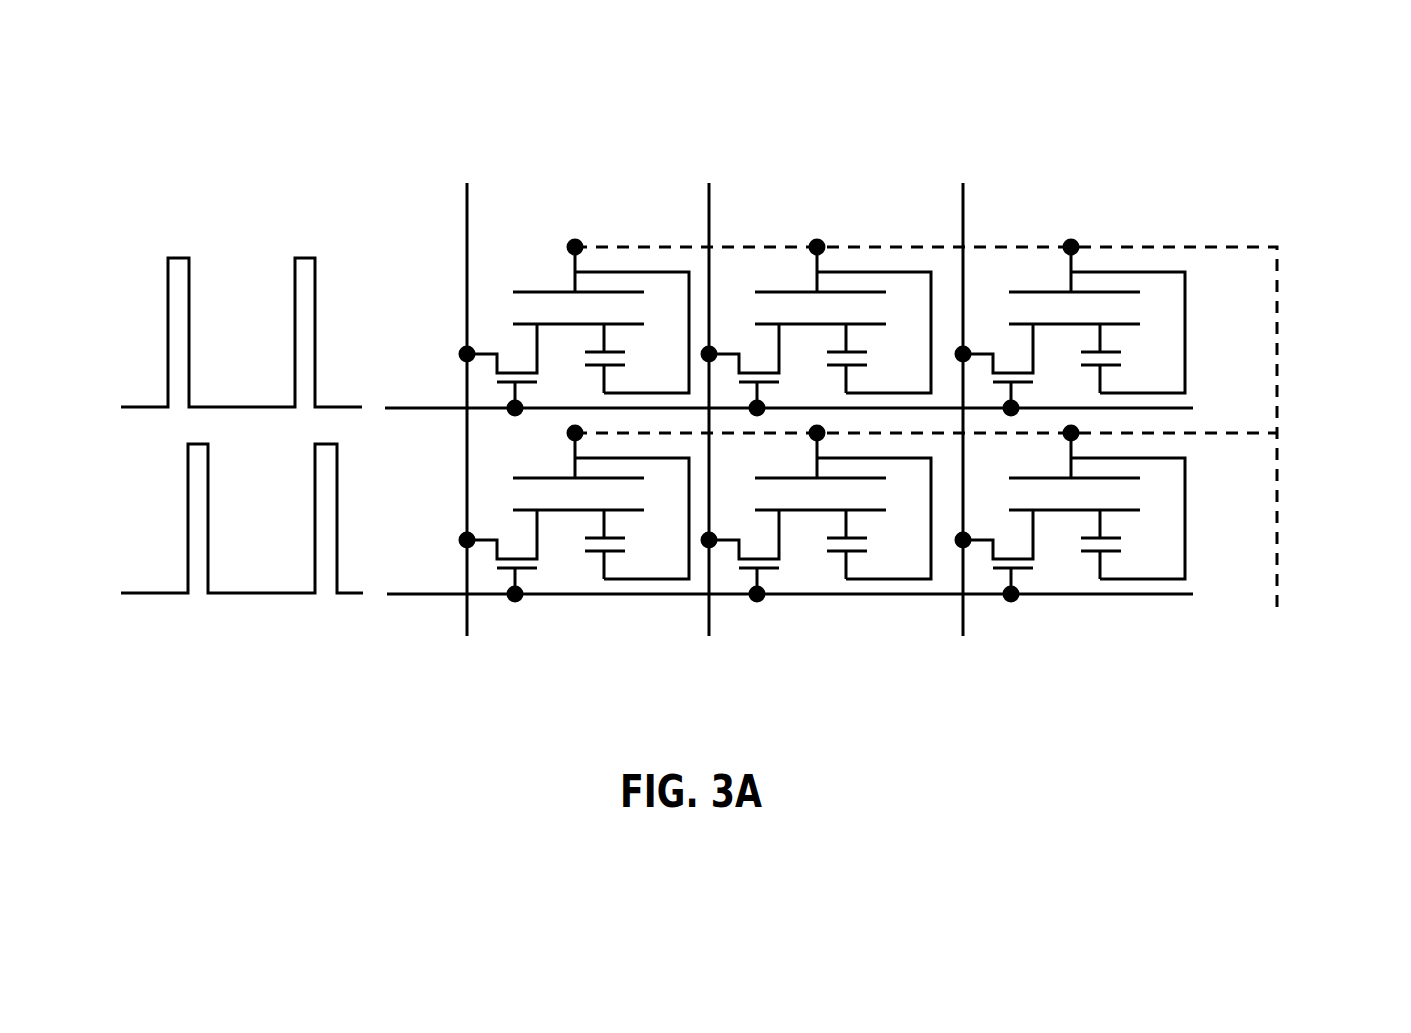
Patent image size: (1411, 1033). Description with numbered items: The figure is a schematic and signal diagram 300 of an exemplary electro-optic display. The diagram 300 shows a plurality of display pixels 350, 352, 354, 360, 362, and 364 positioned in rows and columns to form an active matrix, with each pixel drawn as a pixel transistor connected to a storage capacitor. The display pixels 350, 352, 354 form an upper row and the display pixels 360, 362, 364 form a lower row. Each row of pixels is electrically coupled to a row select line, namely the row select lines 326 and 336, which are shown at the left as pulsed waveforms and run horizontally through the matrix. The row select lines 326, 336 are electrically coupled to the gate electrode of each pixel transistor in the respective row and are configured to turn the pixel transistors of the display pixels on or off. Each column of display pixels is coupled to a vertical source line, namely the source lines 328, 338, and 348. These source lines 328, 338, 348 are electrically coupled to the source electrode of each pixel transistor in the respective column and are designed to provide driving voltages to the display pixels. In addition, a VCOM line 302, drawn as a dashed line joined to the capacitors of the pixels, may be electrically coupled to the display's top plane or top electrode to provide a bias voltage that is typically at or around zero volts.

The schematic and signal diagram 300 is at (142, 96).
The VCOM line 302 is at (1277, 615).
The row select line 326 is at (130, 405).
The row select line 336 is at (130, 592).
The source line 328 is at (470, 613).
The source line 338 is at (710, 612).
The source line 348 is at (964, 612).
The display pixel 350 is at (504, 214).
The display pixel 352 is at (768, 214).
The display pixel 354 is at (1019, 214).
The display pixel 360 is at (630, 615).
The display pixel 362 is at (887, 615).
The display pixel 364 is at (1146, 613).